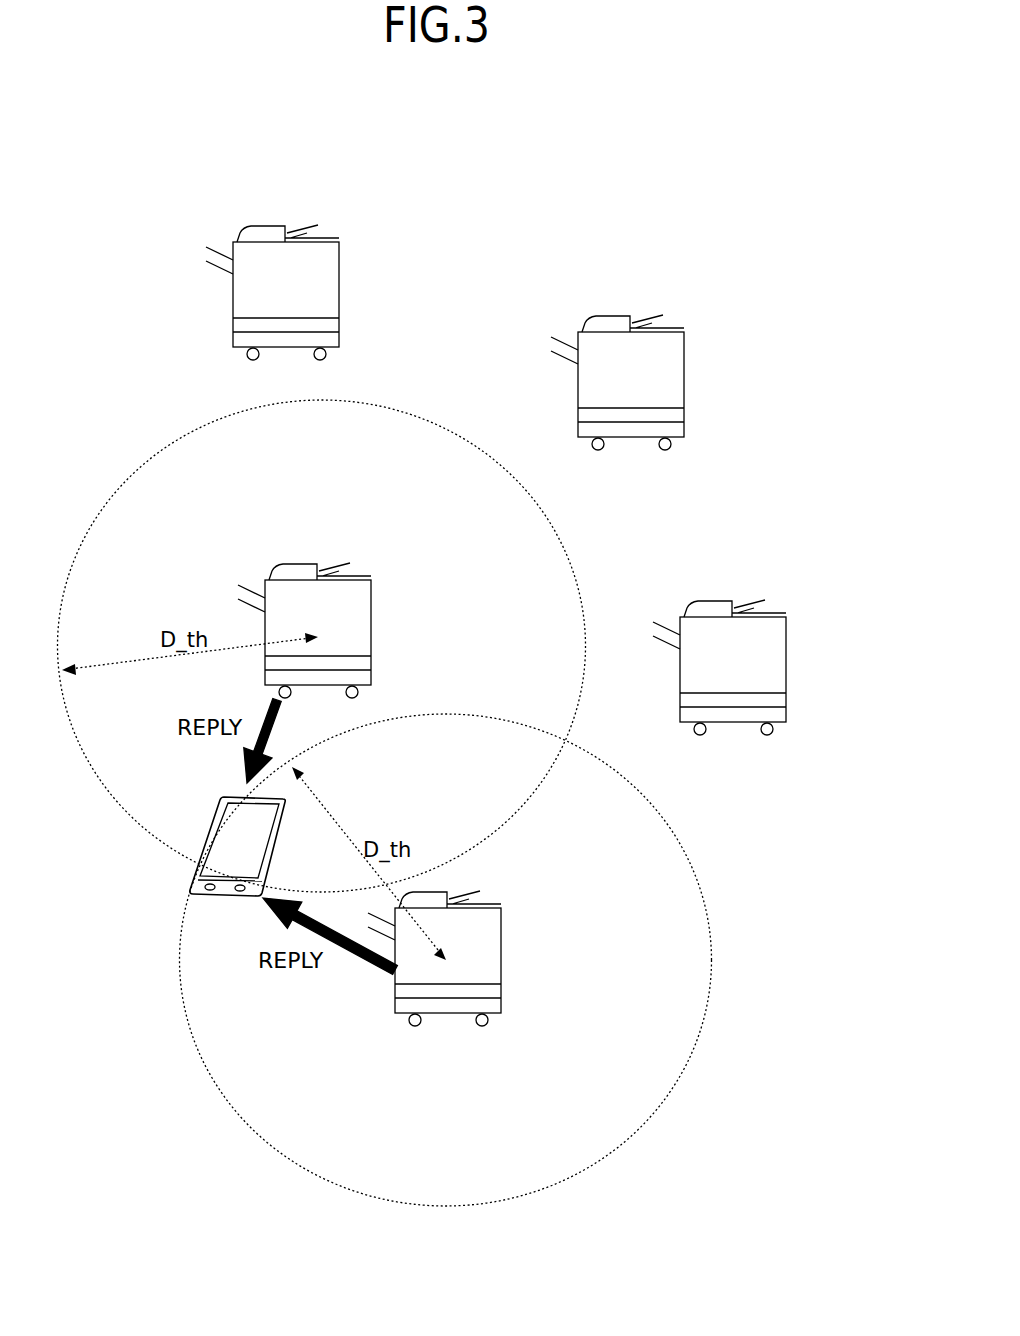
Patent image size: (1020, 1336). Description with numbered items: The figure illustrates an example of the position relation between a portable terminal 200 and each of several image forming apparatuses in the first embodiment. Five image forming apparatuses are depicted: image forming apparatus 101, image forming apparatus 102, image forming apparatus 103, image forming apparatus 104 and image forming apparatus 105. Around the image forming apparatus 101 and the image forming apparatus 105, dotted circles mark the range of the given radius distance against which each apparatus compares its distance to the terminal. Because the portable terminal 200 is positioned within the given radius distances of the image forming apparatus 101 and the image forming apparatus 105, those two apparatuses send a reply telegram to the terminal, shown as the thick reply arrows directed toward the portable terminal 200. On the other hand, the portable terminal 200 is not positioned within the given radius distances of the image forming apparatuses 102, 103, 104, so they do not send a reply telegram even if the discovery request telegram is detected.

The image forming apparatus 101 is at (391, 600).
The image forming apparatus 102 is at (358, 263).
The image forming apparatus 103 is at (703, 352).
The image forming apparatus 104 is at (806, 636).
The image forming apparatus 105 is at (521, 930).
The portable terminal 200 is at (215, 818).